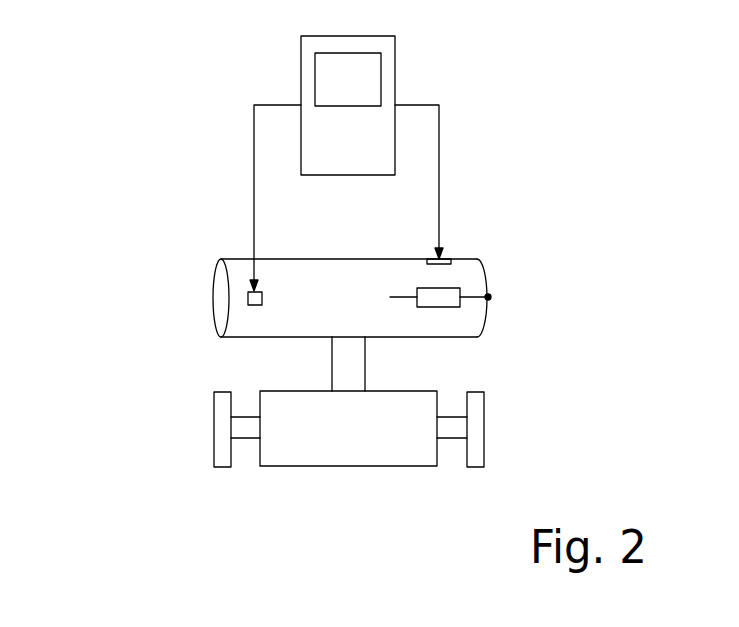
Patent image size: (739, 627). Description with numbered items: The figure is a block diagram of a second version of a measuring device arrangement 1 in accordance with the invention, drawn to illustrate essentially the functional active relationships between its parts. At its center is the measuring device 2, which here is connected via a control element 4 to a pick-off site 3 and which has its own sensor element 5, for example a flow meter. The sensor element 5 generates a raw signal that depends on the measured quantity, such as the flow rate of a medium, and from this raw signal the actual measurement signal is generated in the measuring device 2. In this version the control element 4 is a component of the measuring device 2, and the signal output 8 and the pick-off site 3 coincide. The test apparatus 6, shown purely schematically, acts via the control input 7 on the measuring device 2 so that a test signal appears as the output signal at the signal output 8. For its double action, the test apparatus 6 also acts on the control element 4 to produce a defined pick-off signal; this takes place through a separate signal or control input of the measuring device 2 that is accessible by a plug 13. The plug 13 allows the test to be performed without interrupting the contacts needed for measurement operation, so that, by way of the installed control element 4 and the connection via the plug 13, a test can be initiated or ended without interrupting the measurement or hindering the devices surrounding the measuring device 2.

The measuring device arrangement 1 is at (482, 212).
The measuring device 2 is at (195, 369).
The pick-off site 3 is at (490, 297).
The signal output 8 is at (424, 298).
The control element 4 is at (440, 297).
The sensor element 5 is at (329, 440).
The test apparatus 6 is at (390, 58).
The control input 7 is at (252, 296).
The plug 13 is at (443, 258).